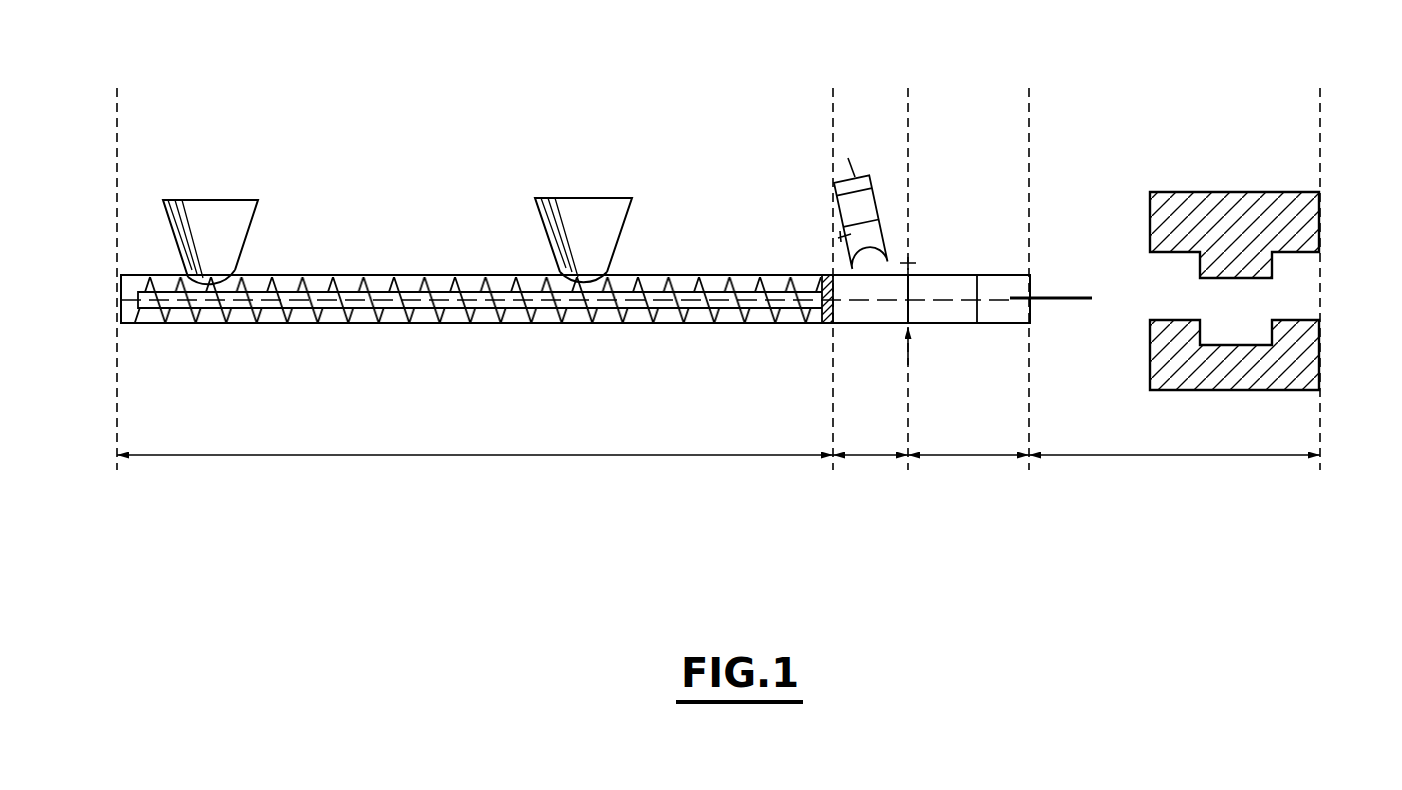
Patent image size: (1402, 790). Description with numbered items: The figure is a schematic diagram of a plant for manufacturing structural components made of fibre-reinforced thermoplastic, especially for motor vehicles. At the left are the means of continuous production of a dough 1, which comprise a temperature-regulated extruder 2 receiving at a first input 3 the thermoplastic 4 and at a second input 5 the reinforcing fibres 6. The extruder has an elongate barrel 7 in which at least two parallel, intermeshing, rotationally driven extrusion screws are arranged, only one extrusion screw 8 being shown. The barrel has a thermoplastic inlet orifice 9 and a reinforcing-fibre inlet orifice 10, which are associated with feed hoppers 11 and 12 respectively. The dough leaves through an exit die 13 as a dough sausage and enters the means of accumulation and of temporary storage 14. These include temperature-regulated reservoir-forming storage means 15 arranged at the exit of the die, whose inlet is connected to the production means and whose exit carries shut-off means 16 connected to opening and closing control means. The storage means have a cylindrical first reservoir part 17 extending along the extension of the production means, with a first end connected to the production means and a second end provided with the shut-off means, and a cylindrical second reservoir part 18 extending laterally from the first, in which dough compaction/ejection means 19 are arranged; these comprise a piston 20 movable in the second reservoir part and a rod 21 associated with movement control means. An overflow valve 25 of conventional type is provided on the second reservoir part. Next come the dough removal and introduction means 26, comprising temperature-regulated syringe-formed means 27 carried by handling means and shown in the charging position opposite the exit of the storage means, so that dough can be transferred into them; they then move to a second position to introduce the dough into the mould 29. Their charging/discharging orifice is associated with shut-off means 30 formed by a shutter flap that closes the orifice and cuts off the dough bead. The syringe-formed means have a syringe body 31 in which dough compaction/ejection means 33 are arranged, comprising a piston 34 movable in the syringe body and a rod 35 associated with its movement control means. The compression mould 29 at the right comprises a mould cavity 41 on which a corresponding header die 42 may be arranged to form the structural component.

The means of continuous production of a dough 1 is at (475, 470).
The extruder 2 is at (406, 192).
The first input 3 is at (278, 198).
The thermoplastic 4 is at (212, 216).
The second input 5 is at (657, 195).
The reinforcing fibres 6 is at (582, 218).
The elongate barrel 7 is at (443, 327).
The extrusion screw 8 is at (352, 318).
The thermoplastic inlet orifice 9 is at (222, 272).
The reinforcing-fibre inlet orifice 10 is at (592, 272).
The feed hopper 11 is at (258, 222).
The feed hopper 12 is at (540, 222).
The exit die 13 is at (818, 326).
The means of accumulation and of temporary storage 14 is at (870, 471).
The reservoir-forming storage means 15 is at (879, 345).
The shut-off means 16 is at (910, 257).
The first reservoir part 17 is at (852, 328).
The second reservoir part 18 is at (893, 223).
The dough compaction/ejection means 19 is at (858, 189).
The piston 20 is at (862, 235).
The rod 21 is at (846, 158).
The overflow valve 25 is at (830, 233).
The dough removal and introduction means 26 is at (968, 470).
The syringe-formed means 27 is at (978, 235).
The mould 29 is at (1174, 469).
The shut-off means 30 is at (927, 337).
The syringe body 31 is at (960, 270).
The dough compaction/ejection means 33 is at (1007, 295).
The piston 34 is at (975, 310).
The rod 35 is at (1059, 304).
The mould cavity 41 is at (1324, 382).
The header die 42 is at (1252, 190).